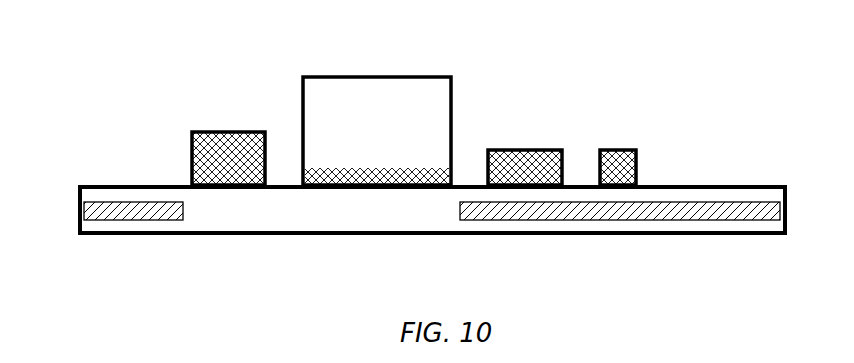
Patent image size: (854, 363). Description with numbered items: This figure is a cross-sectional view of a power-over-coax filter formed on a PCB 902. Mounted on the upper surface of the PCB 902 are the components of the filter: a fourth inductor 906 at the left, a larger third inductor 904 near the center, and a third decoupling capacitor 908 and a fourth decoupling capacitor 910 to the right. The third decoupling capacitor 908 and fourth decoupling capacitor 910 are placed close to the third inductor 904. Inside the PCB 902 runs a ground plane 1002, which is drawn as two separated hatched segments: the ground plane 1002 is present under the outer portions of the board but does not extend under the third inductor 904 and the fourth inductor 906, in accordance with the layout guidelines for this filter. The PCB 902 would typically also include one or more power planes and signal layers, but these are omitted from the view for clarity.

The PCB 902 is at (714, 186).
The third inductor 904 is at (291, 53).
The fourth inductor 906 is at (180, 108).
The third decoupling capacitor 908 is at (523, 128).
The fourth decoupling capacitor 910 is at (607, 128).
The ground plane 1002 is at (460, 221).